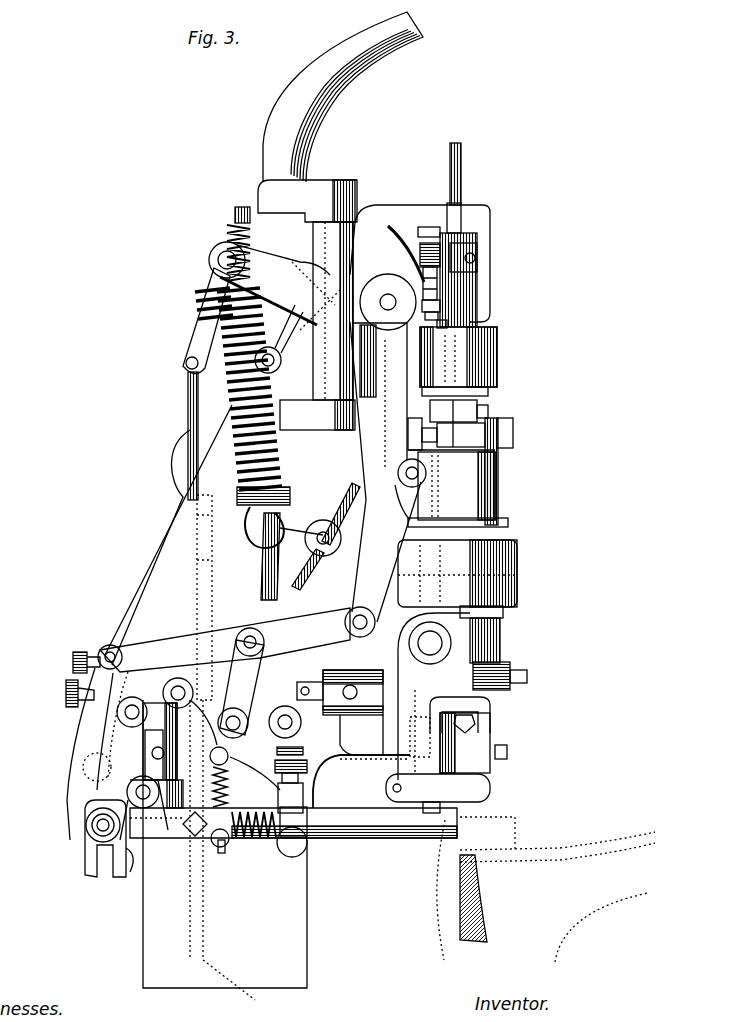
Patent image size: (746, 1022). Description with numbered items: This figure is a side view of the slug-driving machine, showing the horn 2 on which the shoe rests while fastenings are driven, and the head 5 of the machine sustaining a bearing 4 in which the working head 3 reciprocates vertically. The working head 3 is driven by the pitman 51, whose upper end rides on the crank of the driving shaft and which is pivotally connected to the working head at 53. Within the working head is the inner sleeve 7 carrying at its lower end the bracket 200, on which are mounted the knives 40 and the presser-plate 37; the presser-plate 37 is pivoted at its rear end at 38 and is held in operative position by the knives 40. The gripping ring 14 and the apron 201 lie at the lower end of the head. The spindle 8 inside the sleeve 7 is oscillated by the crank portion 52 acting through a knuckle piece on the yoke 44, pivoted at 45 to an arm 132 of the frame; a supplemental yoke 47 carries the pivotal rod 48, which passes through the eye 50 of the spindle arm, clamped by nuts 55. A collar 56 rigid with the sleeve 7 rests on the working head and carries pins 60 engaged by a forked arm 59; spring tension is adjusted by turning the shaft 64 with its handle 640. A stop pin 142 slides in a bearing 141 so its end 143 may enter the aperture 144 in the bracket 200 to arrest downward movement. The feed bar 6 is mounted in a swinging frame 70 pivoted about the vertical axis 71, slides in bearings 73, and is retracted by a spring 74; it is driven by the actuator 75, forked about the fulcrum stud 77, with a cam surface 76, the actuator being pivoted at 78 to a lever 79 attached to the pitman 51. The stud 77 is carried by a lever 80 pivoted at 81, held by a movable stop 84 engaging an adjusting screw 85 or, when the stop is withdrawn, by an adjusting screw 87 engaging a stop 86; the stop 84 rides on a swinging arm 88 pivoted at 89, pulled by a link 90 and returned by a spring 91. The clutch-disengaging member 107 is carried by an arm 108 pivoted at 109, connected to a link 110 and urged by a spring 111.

The horn 2 is at (466, 922).
The working head 3 is at (497, 492).
The bearing 4 is at (515, 562).
The head 5 is at (222, 465).
The feed bar 6 is at (396, 832).
The inner sleeve 7 is at (508, 522).
The spindle 8 is at (468, 300).
The gripping ring 14 is at (492, 704).
The presser-plate 37 is at (500, 794).
The pivot of presser-plate 38 is at (393, 786).
The knives 40 is at (497, 785).
The yoke 44 is at (482, 215).
The pivot of yoke 45 is at (333, 187).
The supplemental yoke 47 is at (433, 222).
The pivotal rod 48 is at (395, 250).
The eye 50 is at (412, 247).
The pitman 51 is at (378, 449).
The crank portion 52 is at (443, 292).
The pivotal connection 53 is at (485, 470).
The clamping nuts 55 is at (474, 258).
The collar 56 is at (492, 420).
The forked arm 59 is at (510, 425).
The pins 60 is at (410, 445).
The shaft 64 is at (320, 557).
The swinging frame 70 is at (167, 793).
The vertical axis 71 is at (160, 790).
The bearings 73 is at (187, 840).
The spring 74 is at (262, 842).
The feed bar actuator 75 is at (84, 848).
The cam surface 76 is at (126, 872).
The fulcrum stud 77 is at (88, 820).
The pivotal connection 78 is at (107, 645).
The lever 79 is at (168, 535).
The lever 80 is at (116, 712).
The pivot 81 is at (83, 768).
The movable stop 84 is at (110, 648).
The adjusting screw 85 is at (66, 690).
The stop 86 is at (121, 655).
The adjusting screw 87 is at (74, 658).
The swinging arm 88 is at (150, 660).
The pivot 89 is at (110, 736).
The link 90 is at (251, 1012).
The spring 91 is at (213, 590).
The clutch-disengaging member 107 is at (313, 245).
The arm 108 is at (280, 345).
The pivot 109 is at (293, 367).
The link 110 is at (188, 385).
The spring 111 is at (210, 270).
The arm 132 is at (302, 193).
The bearing 141 is at (360, 680).
The stop pin 142 is at (308, 688).
The end of pin 143 is at (383, 680).
The aperture 144 is at (498, 646).
The bracket 200 is at (492, 698).
The apron 201 is at (500, 626).
The handle 640 is at (340, 506).